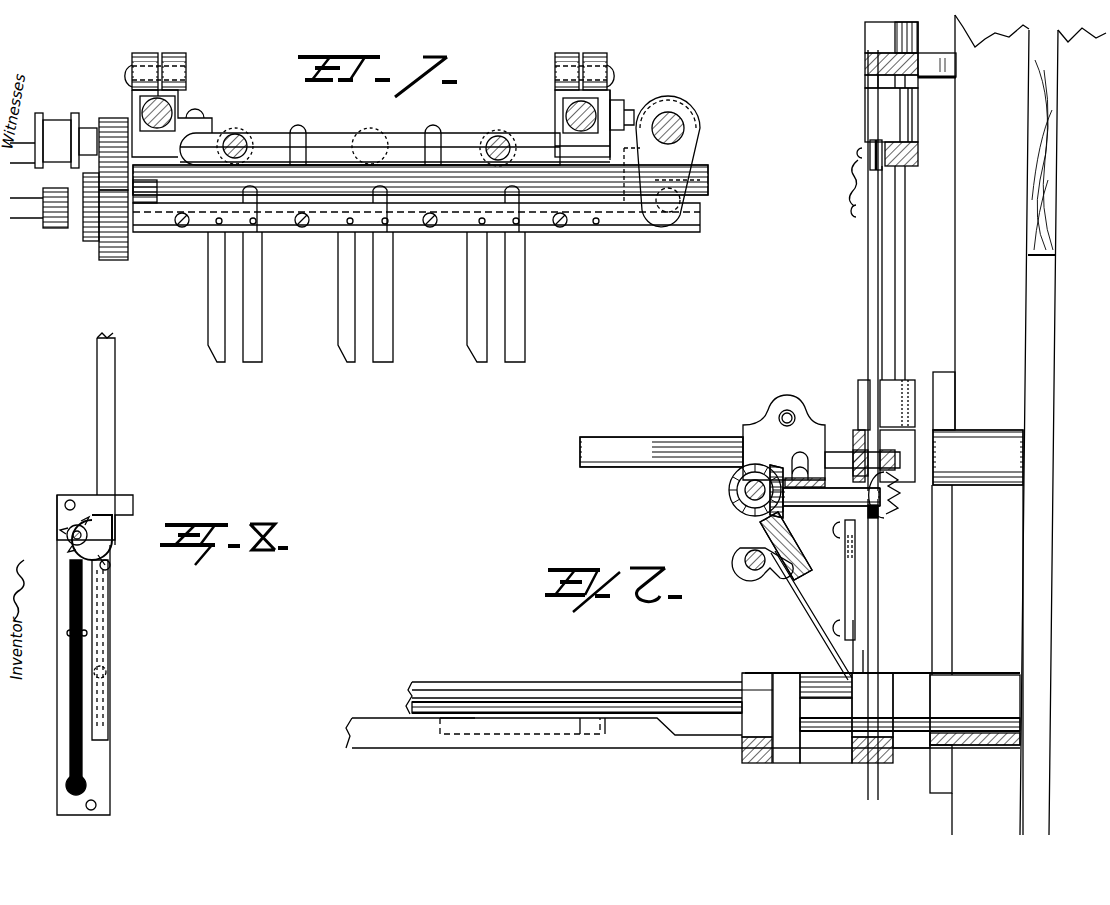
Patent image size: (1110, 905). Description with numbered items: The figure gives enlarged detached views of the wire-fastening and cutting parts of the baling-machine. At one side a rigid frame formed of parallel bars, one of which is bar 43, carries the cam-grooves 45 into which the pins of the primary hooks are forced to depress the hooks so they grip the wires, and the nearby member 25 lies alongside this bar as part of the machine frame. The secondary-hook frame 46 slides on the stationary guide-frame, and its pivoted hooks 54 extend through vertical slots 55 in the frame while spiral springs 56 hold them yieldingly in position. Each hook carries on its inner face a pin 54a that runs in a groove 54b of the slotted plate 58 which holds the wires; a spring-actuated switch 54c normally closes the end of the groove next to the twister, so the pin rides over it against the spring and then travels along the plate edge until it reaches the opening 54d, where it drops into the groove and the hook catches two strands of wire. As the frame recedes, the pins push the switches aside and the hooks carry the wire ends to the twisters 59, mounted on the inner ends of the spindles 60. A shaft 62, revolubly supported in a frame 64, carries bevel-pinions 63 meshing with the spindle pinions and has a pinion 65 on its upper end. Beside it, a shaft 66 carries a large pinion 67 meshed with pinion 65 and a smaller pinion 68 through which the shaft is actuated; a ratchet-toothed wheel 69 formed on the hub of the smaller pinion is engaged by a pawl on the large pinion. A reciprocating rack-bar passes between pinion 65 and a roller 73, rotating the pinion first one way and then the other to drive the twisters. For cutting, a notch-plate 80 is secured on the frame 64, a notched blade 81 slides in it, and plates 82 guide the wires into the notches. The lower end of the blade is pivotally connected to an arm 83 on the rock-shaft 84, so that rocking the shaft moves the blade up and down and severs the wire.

In FIG. 6, the guide rail 25 is at (676, 690).
In FIG. 6, the parallel bar 43 is at (608, 740).
In FIG. 6, the cam-groove 45 is at (556, 740).
In FIG. 6, the secondary-hook frame 46 is at (919, 158).
In FIG. 8, the pivoted hook 54 is at (116, 462).
In FIG. 6, the pivoted hook 54 is at (868, 318).
In FIG. 8, the pin 54a is at (110, 540).
In FIG. 8, the groove 54b is at (100, 710).
In FIG. 8, the spring-actuated switch 54c is at (111, 566).
In FIG. 8, the opening 54d is at (102, 752).
In FIG. 6, the vertical slot 55 is at (880, 140).
In FIG. 6, the spiral spring 56 is at (850, 172).
In FIG. 8, the slotted plate 58 is at (109, 688).
In FIG. 6, the slotted plate 58 is at (856, 585).
In FIG. 8, the twister 59 is at (67, 535).
In FIG. 6, the twister 59 is at (899, 507).
In FIG. 7, the spindle 60 is at (240, 145).
In FIG. 6, the spindle 60 is at (835, 505).
In FIG. 6, the shaft 62 is at (729, 490).
In FIG. 6, the bevel-pinion 63 is at (735, 505).
In FIG. 7, the frame 64 is at (185, 102).
In FIG. 6, the frame 64 is at (702, 441).
In FIG. 7, the pinion 65 is at (112, 118).
In FIG. 6, the shaft 66 is at (745, 573).
In FIG. 7, the pinion 67 is at (116, 260).
In FIG. 7, the smaller pinion 68 is at (52, 228).
In FIG. 7, the ratchet-toothed wheel 69 is at (90, 232).
In FIG. 7, the roller 73 is at (56, 120).
In FIG. 7, the notch-plate 80 is at (318, 232).
In FIG. 6, the notch-plate 80 is at (783, 575).
In FIG. 7, the notched blade 81 is at (636, 225).
In FIG. 6, the notched blade 81 is at (786, 545).
In FIG. 7, the plate 82 is at (467, 293).
In FIG. 7, the arm 83 is at (686, 170).
In FIG. 7, the rock-shaft 84 is at (686, 128).